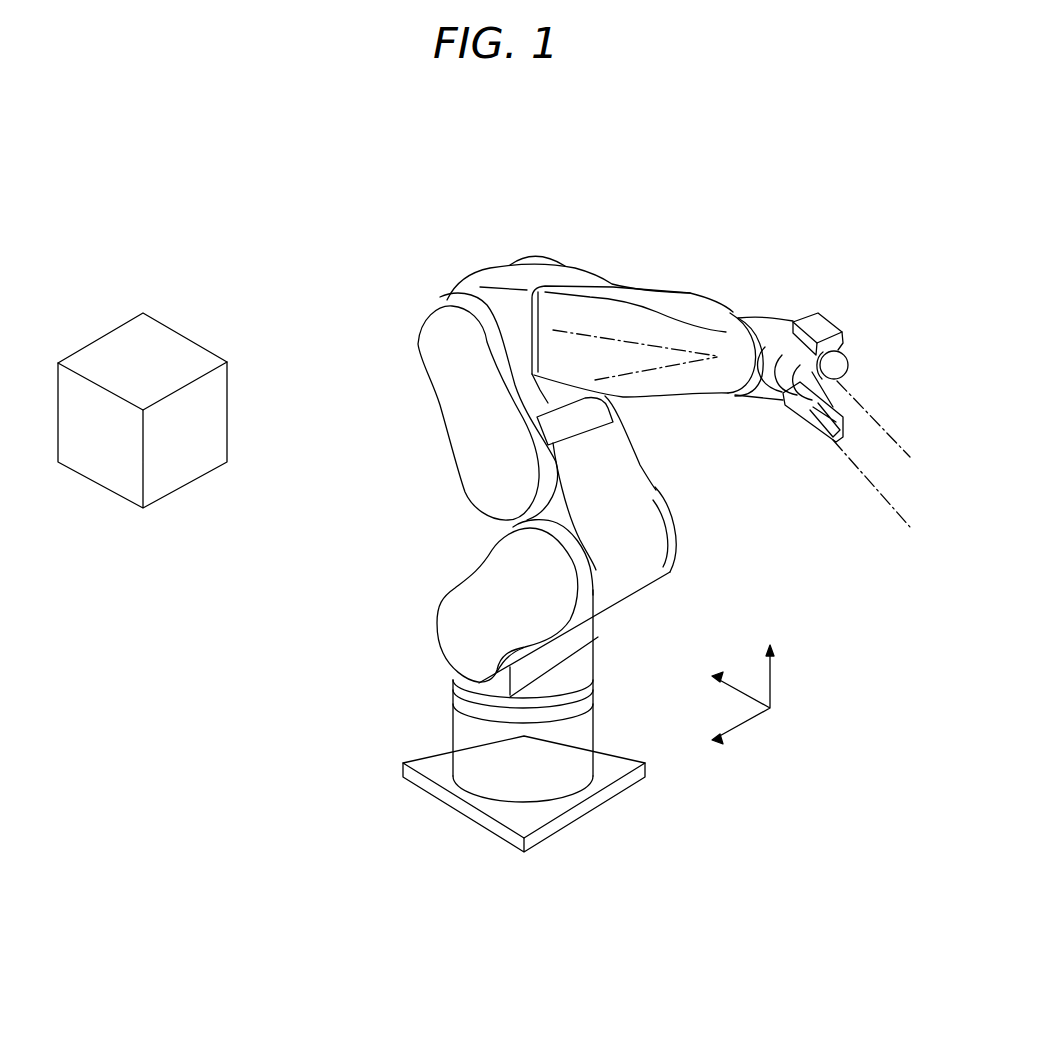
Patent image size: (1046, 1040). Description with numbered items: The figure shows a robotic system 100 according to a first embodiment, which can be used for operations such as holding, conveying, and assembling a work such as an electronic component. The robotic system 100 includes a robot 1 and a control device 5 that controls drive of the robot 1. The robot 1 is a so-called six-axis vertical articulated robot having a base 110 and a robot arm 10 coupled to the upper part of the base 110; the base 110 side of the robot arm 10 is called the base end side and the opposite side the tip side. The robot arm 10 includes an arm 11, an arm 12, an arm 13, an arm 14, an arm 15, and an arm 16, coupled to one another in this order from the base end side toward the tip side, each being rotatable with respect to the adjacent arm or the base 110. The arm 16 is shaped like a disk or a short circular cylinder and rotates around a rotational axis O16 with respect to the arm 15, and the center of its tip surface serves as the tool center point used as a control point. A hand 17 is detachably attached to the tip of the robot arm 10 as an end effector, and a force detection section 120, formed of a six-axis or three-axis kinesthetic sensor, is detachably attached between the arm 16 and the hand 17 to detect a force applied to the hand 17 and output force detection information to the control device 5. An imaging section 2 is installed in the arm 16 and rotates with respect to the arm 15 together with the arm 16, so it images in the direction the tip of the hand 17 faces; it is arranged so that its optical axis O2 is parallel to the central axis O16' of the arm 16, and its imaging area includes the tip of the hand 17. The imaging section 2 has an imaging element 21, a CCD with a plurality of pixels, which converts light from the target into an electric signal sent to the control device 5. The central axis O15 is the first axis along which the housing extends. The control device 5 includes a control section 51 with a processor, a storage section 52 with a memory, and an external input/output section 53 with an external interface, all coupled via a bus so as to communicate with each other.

The robotic system 100 is at (670, 178).
The robot 1 is at (478, 267).
The robot arm 10 is at (568, 269).
The base 110 is at (497, 760).
The arm 11 is at (463, 637).
The arm 12 is at (477, 413).
The arm 13 is at (472, 276).
The arm 14 is at (560, 345).
The arm 15 is at (737, 308).
The arm 16 is at (757, 380).
The force detection section 120 is at (763, 390).
The hand 17 is at (820, 442).
The imaging section 2 is at (842, 337).
The imaging element 21 is at (830, 314).
The central axis O15 is at (652, 338).
The rotational axis O16 is at (656, 417).
The central axis of the arm O16' is at (871, 502).
The optical axis O2 is at (877, 418).
The control device 5 is at (183, 332).
The control section 51 is at (95, 432).
The storage section 52 is at (131, 453).
The external input/output section 53 is at (172, 447).